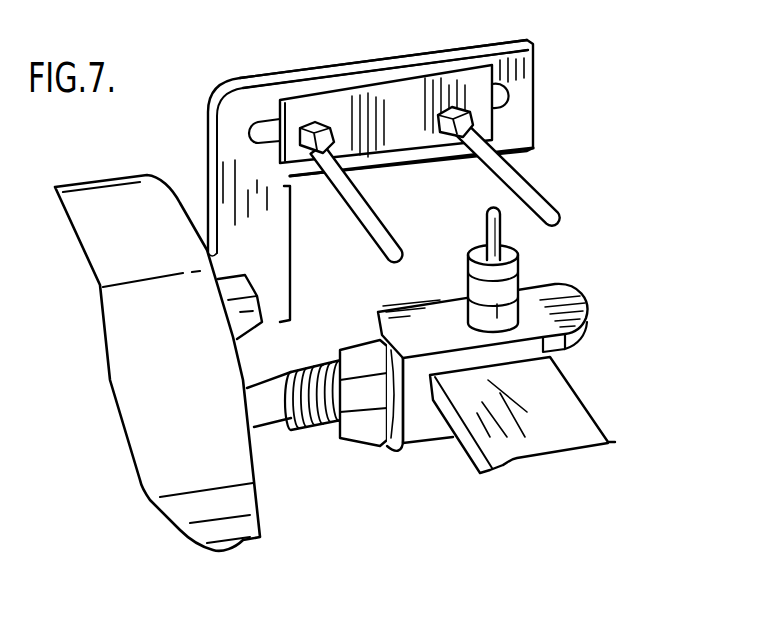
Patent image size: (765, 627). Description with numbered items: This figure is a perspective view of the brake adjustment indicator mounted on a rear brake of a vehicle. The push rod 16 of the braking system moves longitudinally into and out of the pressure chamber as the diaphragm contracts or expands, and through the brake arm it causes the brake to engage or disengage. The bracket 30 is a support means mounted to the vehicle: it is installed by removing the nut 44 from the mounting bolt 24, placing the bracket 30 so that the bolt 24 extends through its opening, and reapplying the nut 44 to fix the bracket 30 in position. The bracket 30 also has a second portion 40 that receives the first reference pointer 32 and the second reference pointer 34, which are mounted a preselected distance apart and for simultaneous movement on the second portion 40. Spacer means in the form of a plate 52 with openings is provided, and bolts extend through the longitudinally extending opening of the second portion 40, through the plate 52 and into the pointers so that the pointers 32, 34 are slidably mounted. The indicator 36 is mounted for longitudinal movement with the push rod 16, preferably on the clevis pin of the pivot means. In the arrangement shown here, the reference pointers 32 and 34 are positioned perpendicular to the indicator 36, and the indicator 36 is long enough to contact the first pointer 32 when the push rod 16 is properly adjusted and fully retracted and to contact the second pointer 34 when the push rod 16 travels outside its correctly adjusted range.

The push rod 16 is at (270, 430).
The mounting bolt 24 is at (258, 330).
The bracket 30 is at (270, 238).
The first reference pointer 32 is at (380, 249).
The second reference pointer 34 is at (540, 193).
The indicator 36 is at (521, 270).
The second portion 40 is at (397, 57).
The nut 44 is at (262, 294).
The plate 52 is at (413, 91).